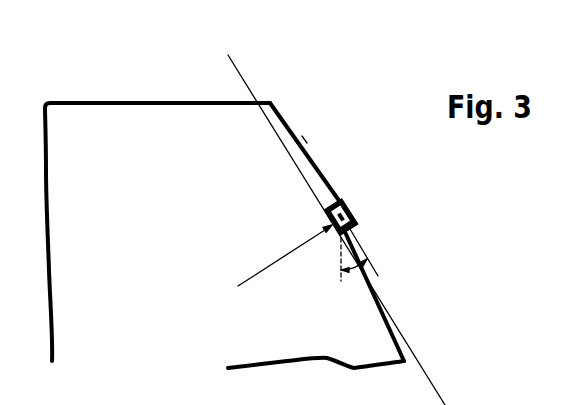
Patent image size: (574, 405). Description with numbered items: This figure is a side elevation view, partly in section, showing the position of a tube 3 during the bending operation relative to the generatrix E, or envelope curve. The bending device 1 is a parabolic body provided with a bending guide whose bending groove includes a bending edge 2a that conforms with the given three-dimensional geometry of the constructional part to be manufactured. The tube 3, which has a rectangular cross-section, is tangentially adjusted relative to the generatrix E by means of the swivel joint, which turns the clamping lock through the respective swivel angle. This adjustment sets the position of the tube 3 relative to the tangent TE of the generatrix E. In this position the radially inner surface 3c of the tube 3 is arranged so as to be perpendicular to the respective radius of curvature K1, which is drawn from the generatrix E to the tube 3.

The bending device 1 is at (153, 101).
The generatrix E is at (323, 128).
The tangent of generatrix TE is at (237, 64).
The single tube 3 is at (344, 198).
The bending edge 2a is at (327, 203).
The radially inner surface 3c is at (297, 193).
The radius of curvature K1 is at (258, 275).